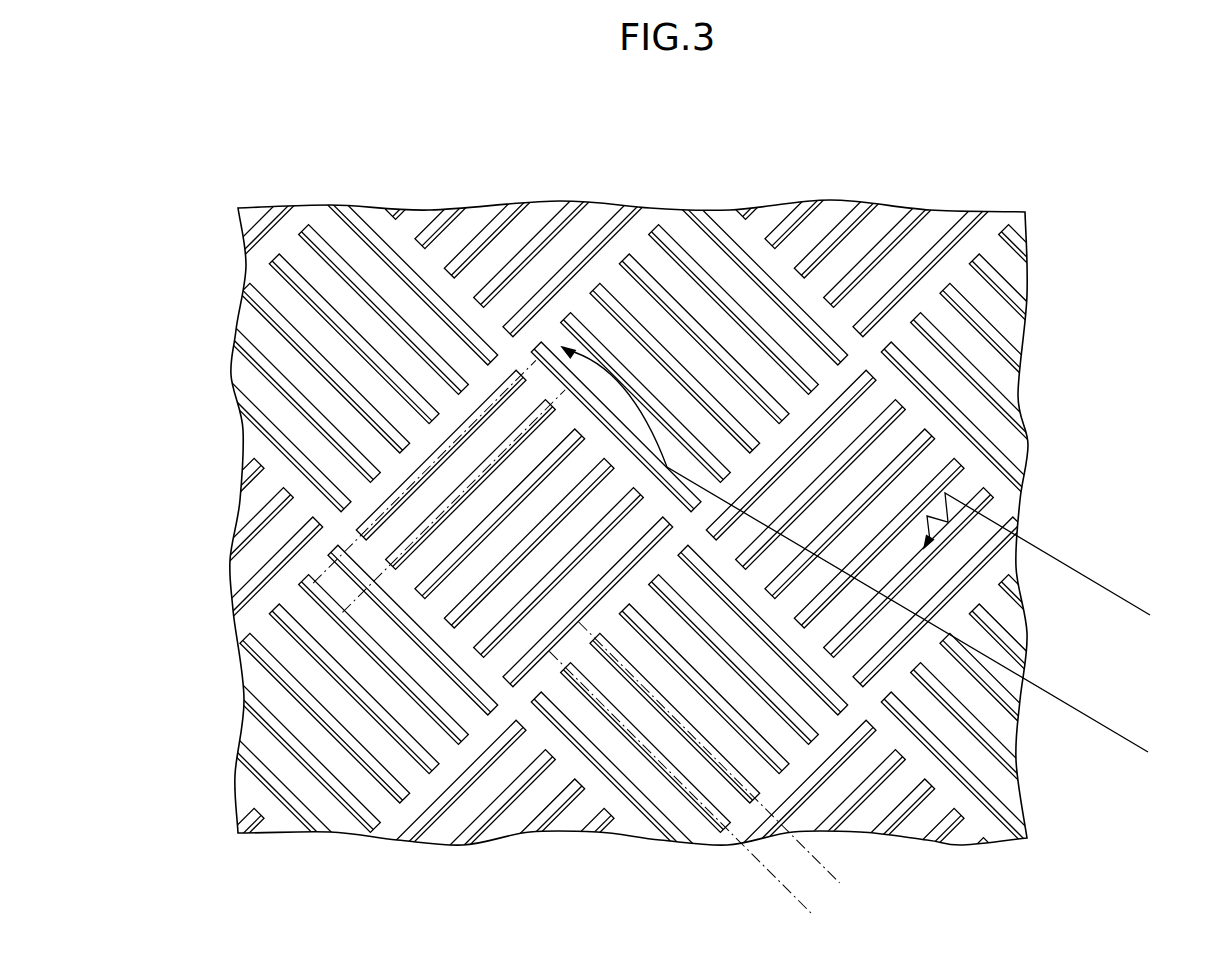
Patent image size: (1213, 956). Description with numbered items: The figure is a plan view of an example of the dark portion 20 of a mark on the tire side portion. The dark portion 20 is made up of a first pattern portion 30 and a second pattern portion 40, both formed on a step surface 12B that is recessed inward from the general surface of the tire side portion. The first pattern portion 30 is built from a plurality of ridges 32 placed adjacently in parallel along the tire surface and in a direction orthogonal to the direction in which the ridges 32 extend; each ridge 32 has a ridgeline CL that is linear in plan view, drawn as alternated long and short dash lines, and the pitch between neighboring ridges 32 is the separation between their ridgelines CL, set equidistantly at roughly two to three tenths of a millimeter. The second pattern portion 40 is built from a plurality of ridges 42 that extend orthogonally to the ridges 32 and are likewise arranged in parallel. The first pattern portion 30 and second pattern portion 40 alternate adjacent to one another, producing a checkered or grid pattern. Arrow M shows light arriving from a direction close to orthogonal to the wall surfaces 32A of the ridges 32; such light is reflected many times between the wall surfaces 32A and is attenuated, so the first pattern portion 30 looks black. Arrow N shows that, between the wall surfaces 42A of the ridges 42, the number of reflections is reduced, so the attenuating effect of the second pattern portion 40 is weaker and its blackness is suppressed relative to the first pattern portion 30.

The dark portion 20 is at (601, 488).
The first pattern portion 30 is at (592, 488).
The ridge 32 is at (487, 397).
The wall surface 32A is at (975, 490).
The second pattern portion 40 is at (689, 521).
The ridge 42 is at (580, 338).
The wall surface 42A is at (541, 340).
The step surface 12B is at (978, 822).
The arrow M is at (1112, 588).
The arrow N is at (1112, 728).
The ridgeline CL is at (382, 574).